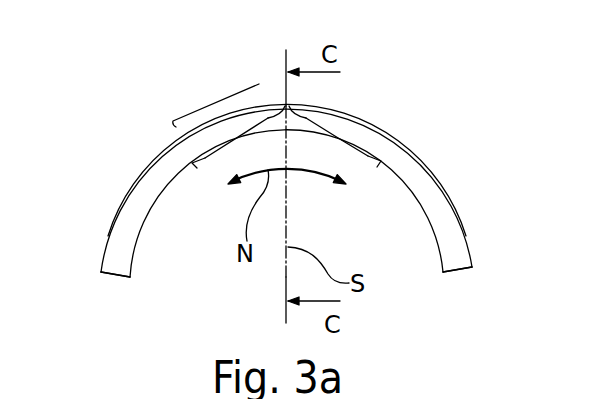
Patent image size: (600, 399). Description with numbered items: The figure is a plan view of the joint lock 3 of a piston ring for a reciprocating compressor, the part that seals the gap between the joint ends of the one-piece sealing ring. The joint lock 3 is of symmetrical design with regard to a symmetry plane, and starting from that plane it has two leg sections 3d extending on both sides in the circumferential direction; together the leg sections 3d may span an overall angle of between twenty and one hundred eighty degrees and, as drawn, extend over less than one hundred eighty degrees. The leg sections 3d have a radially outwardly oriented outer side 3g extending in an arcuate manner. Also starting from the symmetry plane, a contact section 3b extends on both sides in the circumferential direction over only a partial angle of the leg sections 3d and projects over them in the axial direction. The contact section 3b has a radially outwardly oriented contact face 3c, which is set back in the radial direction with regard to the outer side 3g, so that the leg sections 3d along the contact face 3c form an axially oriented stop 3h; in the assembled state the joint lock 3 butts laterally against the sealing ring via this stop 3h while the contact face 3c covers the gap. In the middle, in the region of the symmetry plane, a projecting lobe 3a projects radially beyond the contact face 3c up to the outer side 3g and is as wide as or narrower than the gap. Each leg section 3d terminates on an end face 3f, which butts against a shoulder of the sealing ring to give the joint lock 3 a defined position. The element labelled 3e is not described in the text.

The joint lock 3 is at (411, 73).
The projecting lobe 3a is at (281, 107).
The contact section 3b is at (201, 167).
The contact face 3c is at (209, 139).
The leg section 3d is at (117, 250).
The thin partition 3e is at (221, 103).
The end face 3f is at (117, 279).
The outer side 3g is at (131, 181).
The stop 3h is at (249, 118).